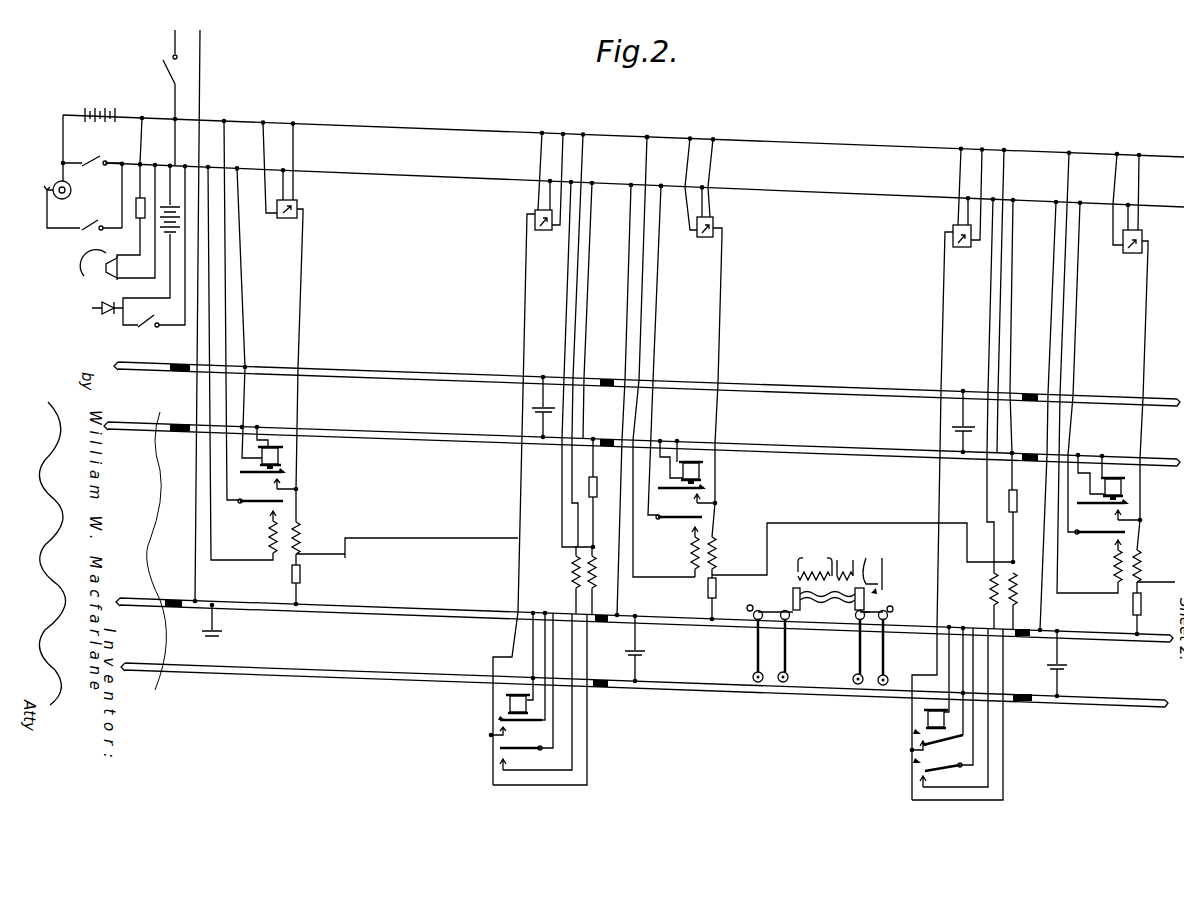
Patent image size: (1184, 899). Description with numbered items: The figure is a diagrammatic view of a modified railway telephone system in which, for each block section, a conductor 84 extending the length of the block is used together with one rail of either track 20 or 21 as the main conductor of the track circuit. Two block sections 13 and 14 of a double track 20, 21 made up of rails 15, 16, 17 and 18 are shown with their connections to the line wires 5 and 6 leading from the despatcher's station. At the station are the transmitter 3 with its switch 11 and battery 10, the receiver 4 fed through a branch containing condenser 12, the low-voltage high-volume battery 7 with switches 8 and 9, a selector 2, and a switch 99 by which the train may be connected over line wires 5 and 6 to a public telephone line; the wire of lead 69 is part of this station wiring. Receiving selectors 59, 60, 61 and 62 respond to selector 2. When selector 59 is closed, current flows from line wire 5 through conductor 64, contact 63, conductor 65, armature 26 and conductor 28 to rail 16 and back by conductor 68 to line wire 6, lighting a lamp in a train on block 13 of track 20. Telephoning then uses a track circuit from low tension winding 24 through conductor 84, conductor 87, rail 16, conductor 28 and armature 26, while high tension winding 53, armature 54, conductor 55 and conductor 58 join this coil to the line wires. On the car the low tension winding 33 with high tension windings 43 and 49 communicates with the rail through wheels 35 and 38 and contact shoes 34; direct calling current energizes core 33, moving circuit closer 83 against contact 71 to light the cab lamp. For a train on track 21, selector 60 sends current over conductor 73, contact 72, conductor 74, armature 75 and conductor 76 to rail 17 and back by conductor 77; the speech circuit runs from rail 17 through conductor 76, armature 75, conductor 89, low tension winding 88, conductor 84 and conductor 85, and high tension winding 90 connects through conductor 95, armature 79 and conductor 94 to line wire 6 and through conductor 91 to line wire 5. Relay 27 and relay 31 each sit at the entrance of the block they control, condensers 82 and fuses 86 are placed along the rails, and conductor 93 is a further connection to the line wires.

The selector 2 is at (65, 195).
The transmitter 3 is at (106, 313).
The receiver 4 is at (104, 268).
The line wire 5 is at (623, 134).
The line wire 6 is at (644, 183).
The battery 7 is at (99, 106).
The switch 8 is at (102, 197).
The switch 9 is at (91, 152).
The battery 10 is at (178, 219).
The switch 11 is at (145, 330).
The condenser 12 is at (136, 203).
The block section 13 is at (397, 271).
The block section 14 is at (806, 283).
The rail 15 is at (402, 366).
The rail 16 is at (392, 441).
The rail 17 is at (383, 604).
The rail 18 is at (360, 680).
The track 20 is at (337, 403).
The track 21 is at (359, 642).
The low tension winding 24 is at (298, 536).
The armature 26 is at (689, 498).
The relay 27 is at (282, 457).
The conductor 28 is at (257, 442).
The relay 31 is at (509, 698).
The low tension winding 33 is at (827, 607).
The contact shoe 34 is at (755, 603).
The wheel 35 is at (886, 640).
The wheel 38 is at (757, 628).
The high tension winding 43 is at (843, 558).
The high tension winding 49 is at (803, 558).
The high tension winding 53 is at (272, 535).
The armature 54 is at (677, 381).
The conductor 55 is at (235, 305).
The conductor 58 is at (222, 258).
The receiving selector 59 is at (298, 204).
The receiving selector 60 is at (535, 212).
The receiving selector 61 is at (715, 222).
The receiving selector 62 is at (948, 198).
The contact 63 is at (297, 209).
The conductor 64 is at (266, 193).
The conductor 65 is at (304, 300).
The conductor 68 is at (586, 297).
The conductor 69 is at (63, 115).
The contact 71 is at (870, 558).
The contact 72 is at (542, 232).
The conductor 73 is at (560, 200).
The conductor 74 is at (524, 291).
The armature 75 is at (500, 720).
The conductor 76 is at (533, 630).
The conductor 77 is at (194, 479).
The armature 79 is at (500, 748).
The condenser 82 is at (220, 634).
The circuit closer 83 is at (872, 592).
The conductor 84 is at (416, 540).
The conductor 85 is at (292, 592).
The fuse 86 is at (301, 575).
The conductor 87 is at (596, 550).
The low tension winding 88 is at (596, 578).
The conductor 89 is at (588, 745).
The high tension winding 90 is at (574, 566).
The conductor 91 is at (573, 517).
The conductor 93 is at (1012, 302).
The conductor 94 is at (565, 331).
The conductor 95 is at (573, 713).
The switch 99 is at (166, 70).